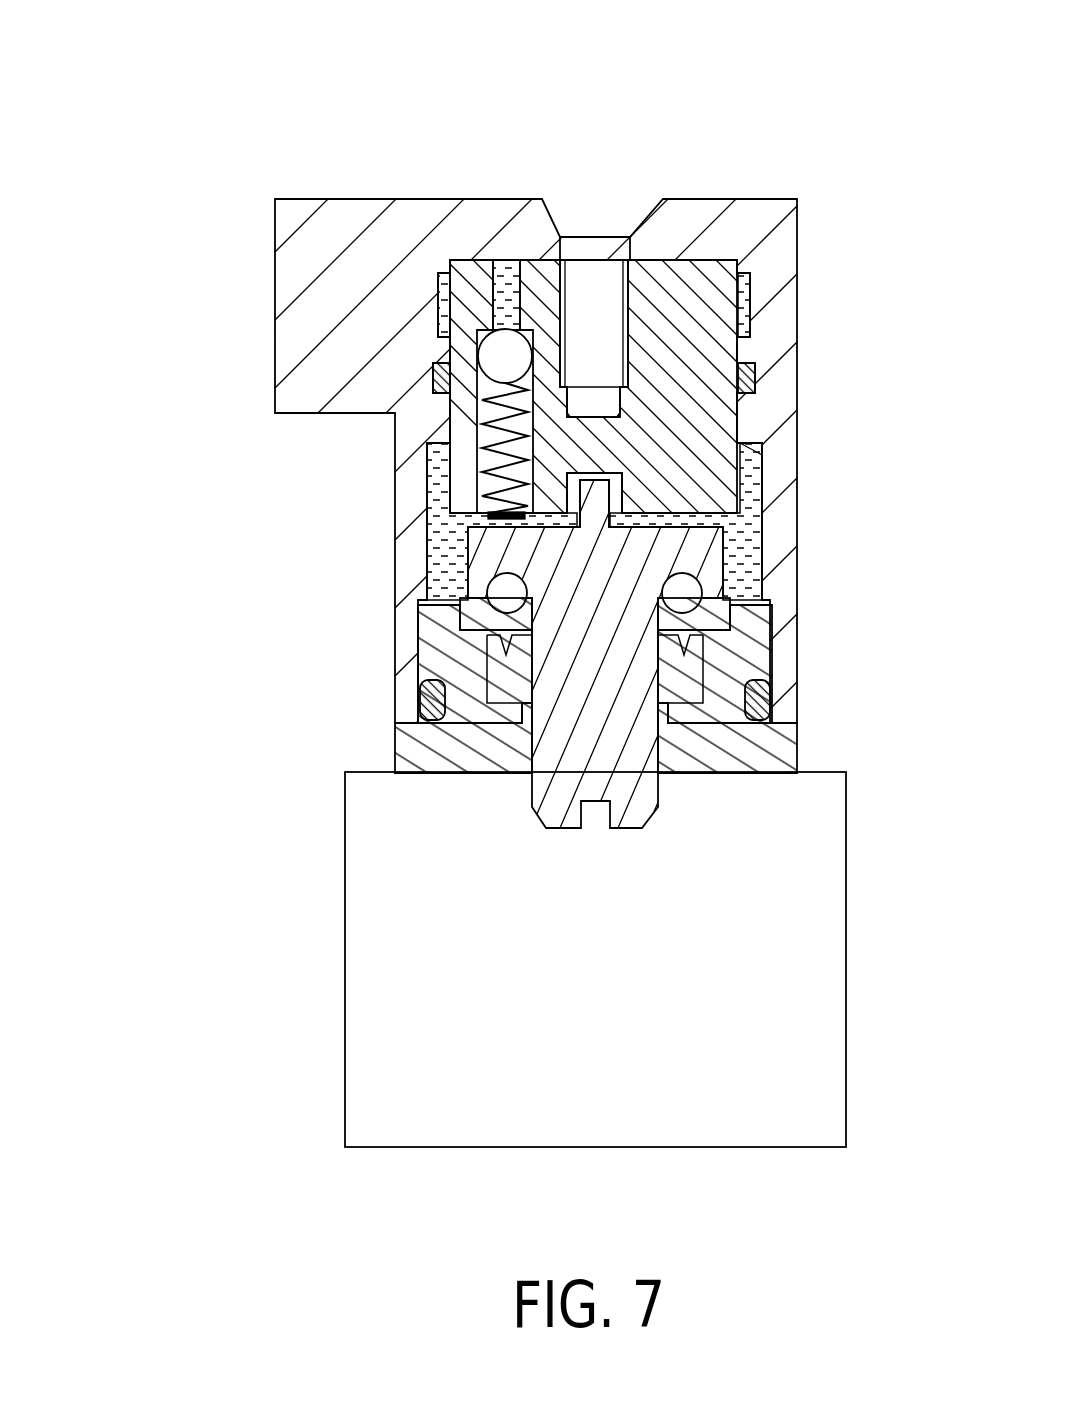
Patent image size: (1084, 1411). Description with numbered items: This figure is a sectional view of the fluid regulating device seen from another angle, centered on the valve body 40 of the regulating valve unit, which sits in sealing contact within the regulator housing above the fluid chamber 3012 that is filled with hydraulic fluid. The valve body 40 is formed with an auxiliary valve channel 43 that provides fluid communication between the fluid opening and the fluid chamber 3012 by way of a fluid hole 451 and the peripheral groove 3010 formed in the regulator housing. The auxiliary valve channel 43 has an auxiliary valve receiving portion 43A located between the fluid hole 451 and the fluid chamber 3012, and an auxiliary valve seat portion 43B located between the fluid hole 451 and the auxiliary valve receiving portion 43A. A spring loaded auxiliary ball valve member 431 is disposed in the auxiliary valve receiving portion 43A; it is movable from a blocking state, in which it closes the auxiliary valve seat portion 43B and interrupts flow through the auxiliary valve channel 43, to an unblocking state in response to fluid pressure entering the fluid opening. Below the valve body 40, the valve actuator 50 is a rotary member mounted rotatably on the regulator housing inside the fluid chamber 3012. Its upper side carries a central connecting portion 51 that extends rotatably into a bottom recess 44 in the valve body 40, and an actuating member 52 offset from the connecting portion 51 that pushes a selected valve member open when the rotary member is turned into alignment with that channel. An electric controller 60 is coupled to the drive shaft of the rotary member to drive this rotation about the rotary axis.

The valve body 40 is at (752, 280).
The peripheral groove 3010 is at (440, 283).
The auxiliary valve receiving portion 43A is at (535, 398).
The auxiliary valve seat portion 43B is at (522, 372).
The fluid hole 451 is at (478, 305).
The auxiliary ball valve member 431 is at (500, 353).
The auxiliary valve channel 43 is at (477, 413).
The fluid chamber 3012 is at (797, 528).
The valve actuator 50 is at (745, 568).
The bottom recess 44 is at (603, 500).
The actuating member 52 is at (503, 527).
The central connecting portion 51 is at (625, 476).
The electric controller 60 is at (848, 998).